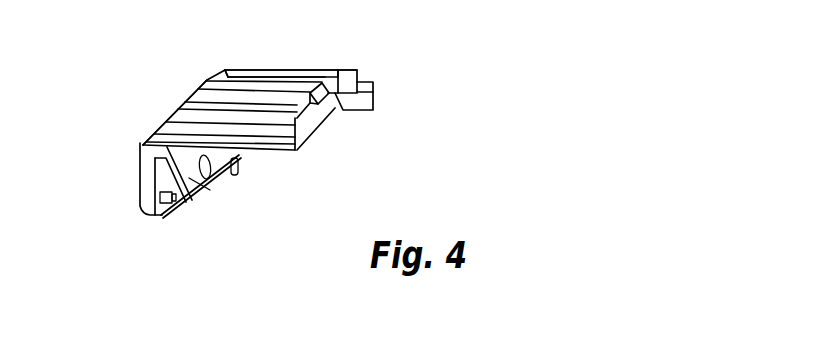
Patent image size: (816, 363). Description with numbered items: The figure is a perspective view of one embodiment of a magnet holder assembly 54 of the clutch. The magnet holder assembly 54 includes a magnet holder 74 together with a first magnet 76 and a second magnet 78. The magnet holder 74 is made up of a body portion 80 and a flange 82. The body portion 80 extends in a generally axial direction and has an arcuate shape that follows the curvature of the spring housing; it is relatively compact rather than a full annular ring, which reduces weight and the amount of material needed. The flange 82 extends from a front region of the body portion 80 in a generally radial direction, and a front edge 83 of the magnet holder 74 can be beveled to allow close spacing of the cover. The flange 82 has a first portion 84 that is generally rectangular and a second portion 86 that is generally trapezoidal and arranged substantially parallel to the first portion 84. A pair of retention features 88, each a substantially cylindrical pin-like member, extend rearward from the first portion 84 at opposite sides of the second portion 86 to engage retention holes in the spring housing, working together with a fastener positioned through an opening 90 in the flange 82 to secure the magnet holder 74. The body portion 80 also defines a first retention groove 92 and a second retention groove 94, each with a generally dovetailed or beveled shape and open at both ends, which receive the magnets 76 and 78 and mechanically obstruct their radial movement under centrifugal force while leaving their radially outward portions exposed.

The magnet holder assembly 54 is at (429, 59).
The magnet holder 74 is at (338, 105).
The first magnet 76 is at (203, 83).
The second magnet 78 is at (243, 72).
The body portion 80 is at (324, 90).
The flange 82 is at (140, 179).
The front edge 83 is at (155, 128).
The first portion 84 is at (184, 200).
The second portion 86 is at (206, 180).
The retention features 88 is at (160, 198).
The opening 90 is at (210, 173).
The first retention groove 92 is at (318, 118).
The second retention groove 94 is at (375, 88).